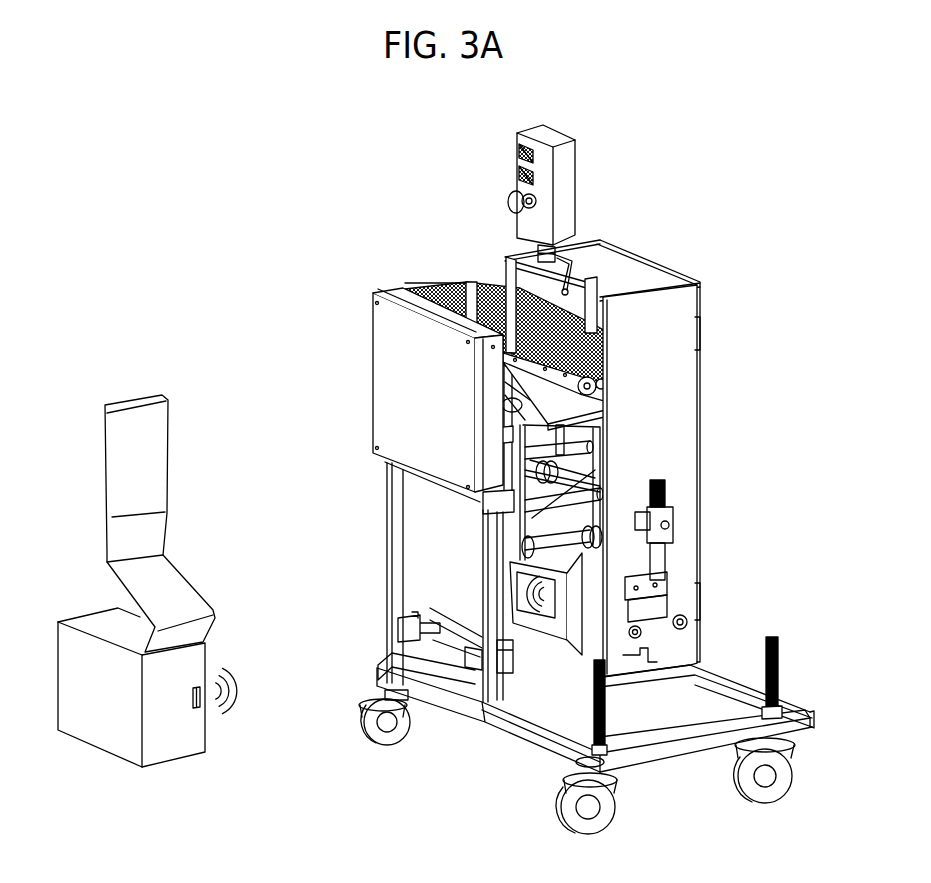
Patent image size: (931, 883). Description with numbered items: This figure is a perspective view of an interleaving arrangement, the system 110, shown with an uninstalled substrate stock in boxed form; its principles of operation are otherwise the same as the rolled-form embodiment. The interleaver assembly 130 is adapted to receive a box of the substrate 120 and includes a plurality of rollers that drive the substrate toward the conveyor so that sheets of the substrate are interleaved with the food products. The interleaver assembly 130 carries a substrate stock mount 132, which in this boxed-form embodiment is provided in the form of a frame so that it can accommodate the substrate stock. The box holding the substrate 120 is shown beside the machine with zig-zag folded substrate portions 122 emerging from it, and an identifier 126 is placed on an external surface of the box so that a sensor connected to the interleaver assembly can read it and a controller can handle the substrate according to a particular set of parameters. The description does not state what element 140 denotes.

The system 110 is at (586, 479).
The substrate 120 is at (215, 647).
The zig-zag folded substrate portions 122 is at (153, 441).
The identifier 126 is at (203, 708).
The interleaver assembly 130 is at (707, 438).
The substrate stock mount 132 is at (535, 670).
The display 140 is at (545, 593).